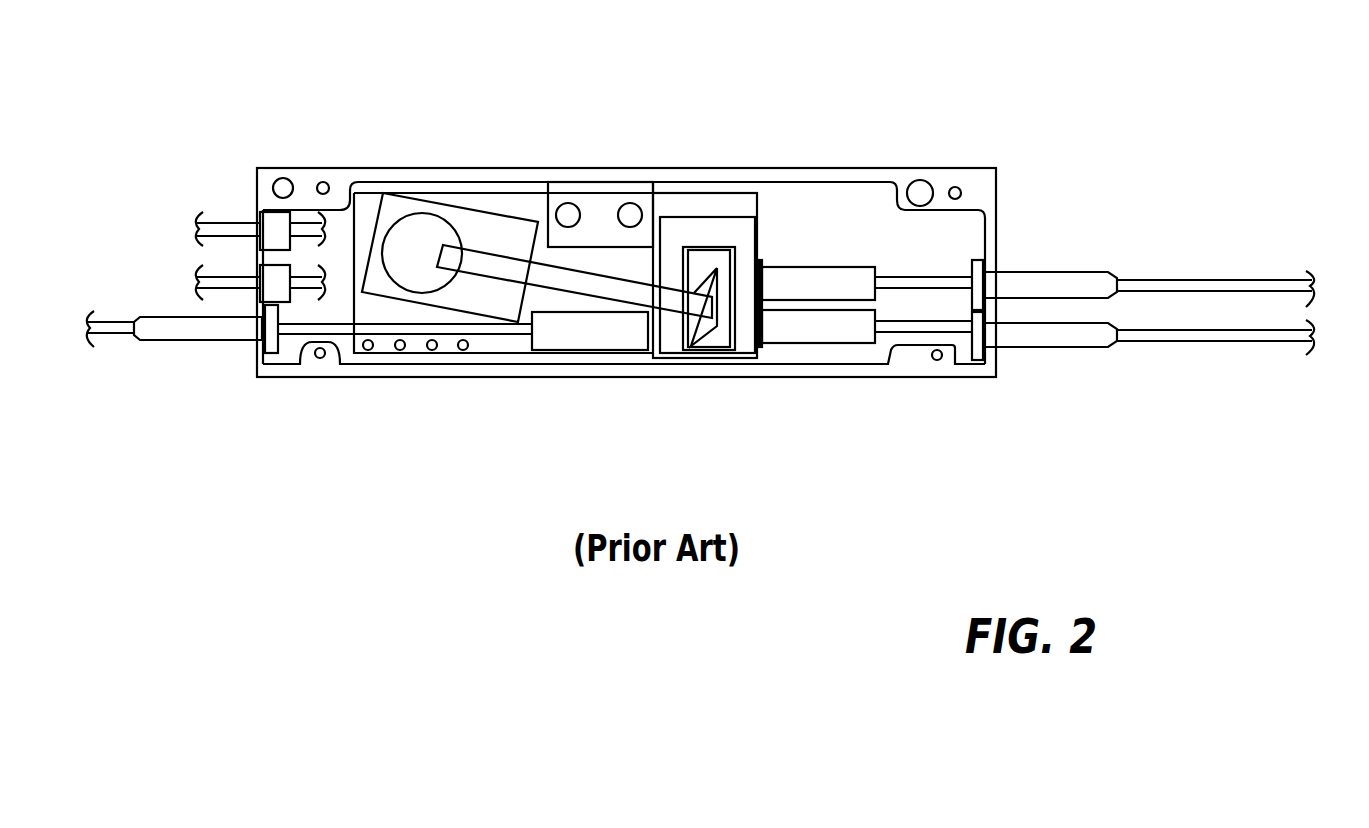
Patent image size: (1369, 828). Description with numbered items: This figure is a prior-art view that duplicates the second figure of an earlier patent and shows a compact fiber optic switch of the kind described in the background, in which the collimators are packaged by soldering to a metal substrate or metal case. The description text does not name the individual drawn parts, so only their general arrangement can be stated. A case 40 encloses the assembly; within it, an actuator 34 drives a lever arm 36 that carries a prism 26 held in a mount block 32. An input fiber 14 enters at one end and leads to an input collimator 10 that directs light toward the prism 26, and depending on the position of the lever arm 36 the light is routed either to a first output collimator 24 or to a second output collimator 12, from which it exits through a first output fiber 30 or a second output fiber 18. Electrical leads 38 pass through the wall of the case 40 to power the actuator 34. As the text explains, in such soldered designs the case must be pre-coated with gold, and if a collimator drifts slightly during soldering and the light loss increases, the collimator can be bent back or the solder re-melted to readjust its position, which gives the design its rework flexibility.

The housing 40 is at (887, 170).
The actuator motor 34 is at (457, 215).
The lever arm 36 is at (505, 267).
The prism mount block 32 is at (700, 228).
The prism 26 is at (712, 273).
The input collimator 10 is at (578, 338).
The first output collimator 24 is at (818, 282).
The second output collimator 12 is at (818, 332).
The first output fiber 30 is at (1203, 282).
The second output fiber 18 is at (1210, 340).
The electrical leads 38 is at (192, 277).
The input fiber 14 is at (112, 320).